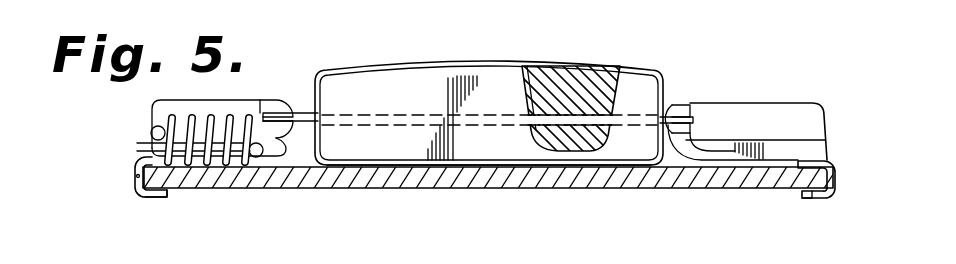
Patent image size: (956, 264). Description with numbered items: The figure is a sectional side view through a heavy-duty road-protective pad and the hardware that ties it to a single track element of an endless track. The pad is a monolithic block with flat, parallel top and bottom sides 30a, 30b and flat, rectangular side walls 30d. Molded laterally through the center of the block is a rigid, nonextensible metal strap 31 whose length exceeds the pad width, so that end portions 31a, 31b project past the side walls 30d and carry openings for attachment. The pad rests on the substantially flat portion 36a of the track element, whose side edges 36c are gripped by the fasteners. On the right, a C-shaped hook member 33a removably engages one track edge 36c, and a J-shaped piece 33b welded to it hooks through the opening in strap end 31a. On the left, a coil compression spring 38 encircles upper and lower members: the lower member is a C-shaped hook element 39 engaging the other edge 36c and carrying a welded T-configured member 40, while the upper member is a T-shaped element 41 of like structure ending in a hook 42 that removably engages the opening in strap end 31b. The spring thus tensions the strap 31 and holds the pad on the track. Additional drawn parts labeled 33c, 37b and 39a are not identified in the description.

The top side 30a is at (452, 169).
The bottom side 30b is at (545, 64).
The side walls 30d is at (310, 78).
The strap 31 is at (420, 97).
The strap end portion 31a is at (695, 120).
The strap end portion 31b is at (318, 106).
The C-shaped hook member 33a is at (831, 172).
The J-shaped element 33b is at (796, 147).
The clamp tabs 33c is at (686, 103).
The flat portion 36a is at (300, 166).
The side edges 36c is at (168, 181).
The lever 37b is at (796, 107).
The coil compression spring 38 is at (258, 99).
The C-shaped hook element 39 is at (134, 162).
The clip end 39a is at (154, 198).
The T-configured member 40 is at (143, 144).
The T-shaped element 41 is at (203, 133).
The hook 42 is at (268, 99).